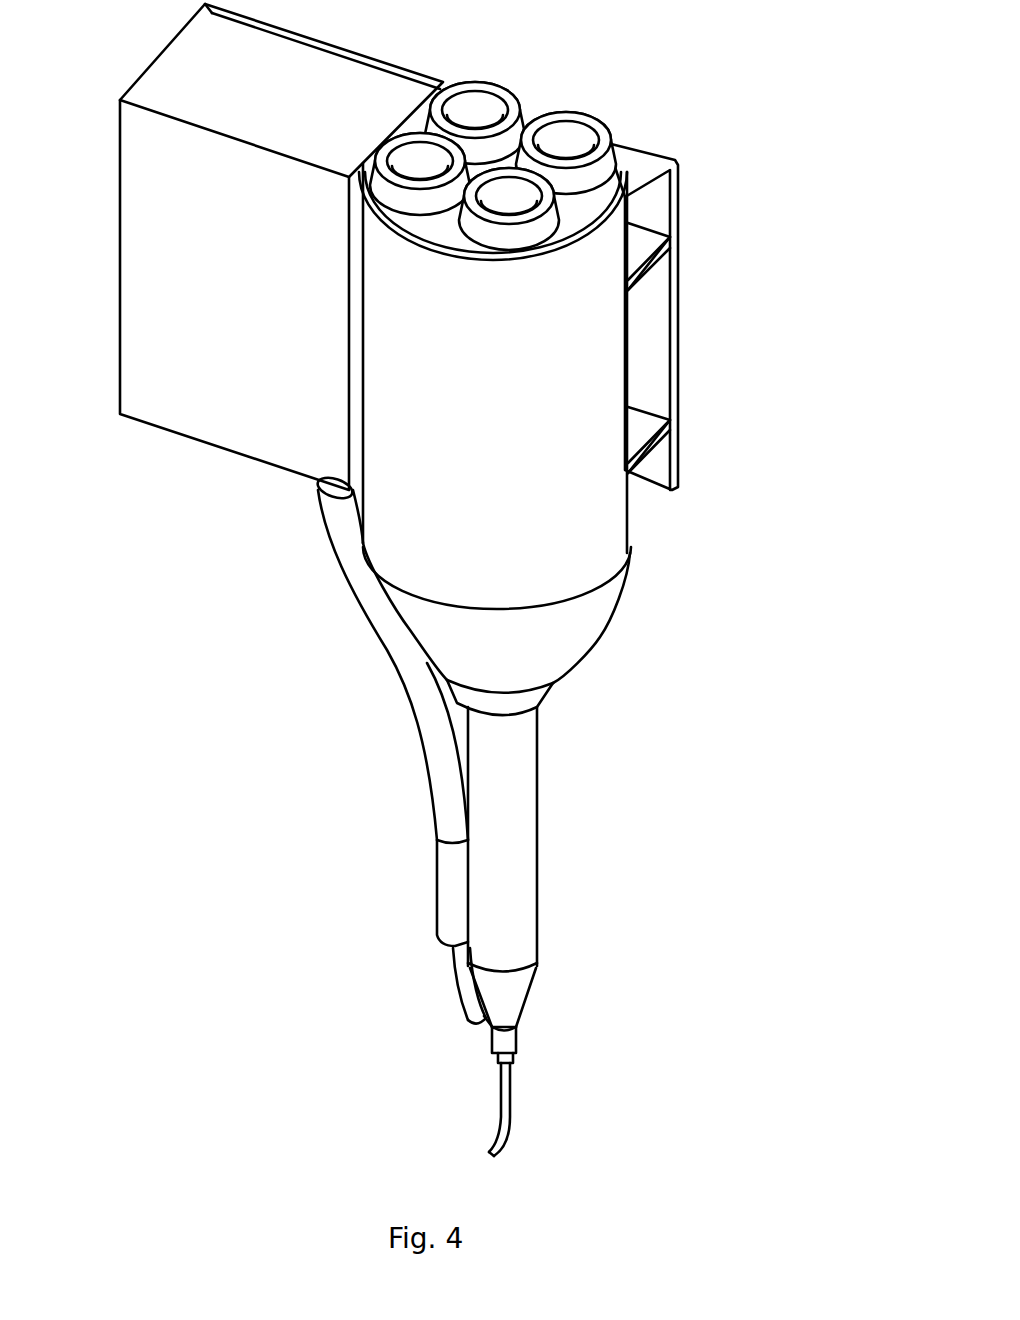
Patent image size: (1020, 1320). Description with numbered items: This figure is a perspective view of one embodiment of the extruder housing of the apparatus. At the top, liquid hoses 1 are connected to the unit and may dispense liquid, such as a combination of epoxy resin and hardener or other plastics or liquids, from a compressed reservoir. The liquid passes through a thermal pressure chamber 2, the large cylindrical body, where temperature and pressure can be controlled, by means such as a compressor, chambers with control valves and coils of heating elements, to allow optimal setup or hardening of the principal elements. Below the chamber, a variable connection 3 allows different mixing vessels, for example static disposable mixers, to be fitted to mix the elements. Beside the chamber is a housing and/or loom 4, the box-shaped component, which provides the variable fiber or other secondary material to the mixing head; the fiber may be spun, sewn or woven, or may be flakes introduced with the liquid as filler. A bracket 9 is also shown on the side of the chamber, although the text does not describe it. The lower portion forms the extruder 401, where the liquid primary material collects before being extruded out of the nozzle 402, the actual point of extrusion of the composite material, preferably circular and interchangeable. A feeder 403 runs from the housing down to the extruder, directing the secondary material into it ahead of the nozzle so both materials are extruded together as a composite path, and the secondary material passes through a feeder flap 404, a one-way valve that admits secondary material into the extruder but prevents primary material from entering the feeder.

The liquid hoses 1 is at (525, 98).
The thermal pressure chamber 2 is at (572, 388).
The variable connection 3 is at (557, 690).
The housing and/or loom 4 is at (175, 268).
The mounting bracket 9 is at (653, 303).
The extruder 401 is at (627, 593).
The nozzle 402 is at (523, 1040).
The feeder 403 is at (427, 850).
The feeder flap 404 is at (457, 1007).